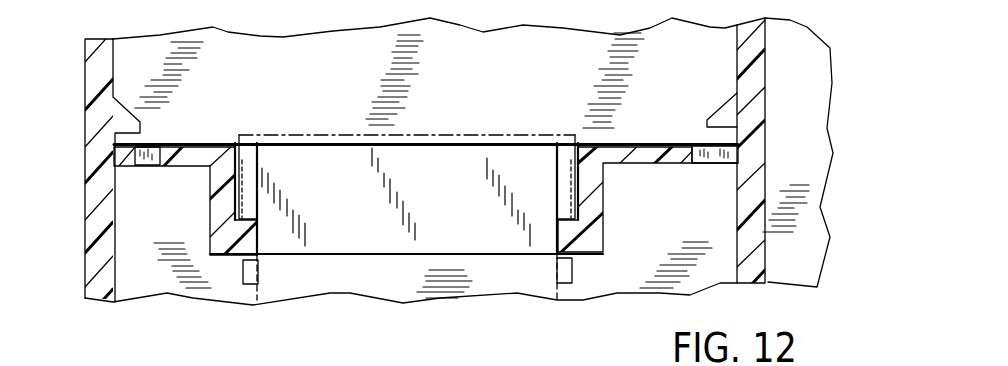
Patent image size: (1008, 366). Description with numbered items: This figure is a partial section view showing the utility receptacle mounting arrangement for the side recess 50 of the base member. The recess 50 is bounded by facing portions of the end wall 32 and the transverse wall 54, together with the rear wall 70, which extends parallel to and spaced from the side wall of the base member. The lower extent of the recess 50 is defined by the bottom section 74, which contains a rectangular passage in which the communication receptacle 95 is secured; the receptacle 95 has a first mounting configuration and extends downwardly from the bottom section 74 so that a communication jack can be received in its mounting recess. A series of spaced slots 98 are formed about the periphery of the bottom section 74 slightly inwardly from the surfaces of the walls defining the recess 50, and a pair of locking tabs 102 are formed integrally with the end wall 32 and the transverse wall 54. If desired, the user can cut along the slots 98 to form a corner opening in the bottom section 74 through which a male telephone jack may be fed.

The end wall 32 is at (85, 97).
The side recess 50 is at (374, 58).
The transverse wall 54 is at (767, 68).
The rear wall 70 is at (470, 91).
The bottom section 74 is at (213, 143).
The communication receptacle 95 is at (484, 134).
The spaced slots 98 is at (142, 158).
The locking tabs 102 is at (727, 98).